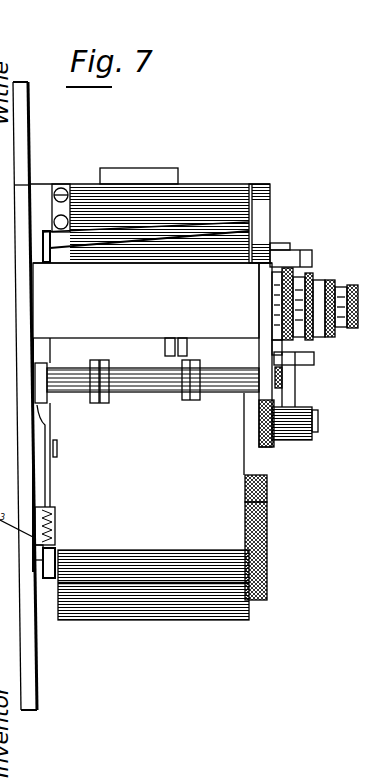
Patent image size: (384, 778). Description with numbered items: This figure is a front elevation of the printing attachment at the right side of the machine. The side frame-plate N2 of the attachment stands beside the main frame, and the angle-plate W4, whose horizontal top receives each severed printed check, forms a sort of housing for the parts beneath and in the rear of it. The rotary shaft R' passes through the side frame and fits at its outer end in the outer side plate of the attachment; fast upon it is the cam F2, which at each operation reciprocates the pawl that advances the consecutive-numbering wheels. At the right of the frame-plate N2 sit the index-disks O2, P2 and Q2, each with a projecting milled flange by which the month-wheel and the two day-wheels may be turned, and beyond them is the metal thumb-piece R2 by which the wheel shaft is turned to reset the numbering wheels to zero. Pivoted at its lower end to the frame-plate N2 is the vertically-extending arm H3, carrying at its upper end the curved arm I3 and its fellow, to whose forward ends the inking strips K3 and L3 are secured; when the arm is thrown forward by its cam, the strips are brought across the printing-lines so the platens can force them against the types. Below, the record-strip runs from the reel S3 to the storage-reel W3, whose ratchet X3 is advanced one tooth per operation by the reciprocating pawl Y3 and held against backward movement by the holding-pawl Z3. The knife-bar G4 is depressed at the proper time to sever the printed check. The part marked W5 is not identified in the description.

The side frame-plate N2 is at (262, 200).
The shaft W5 is at (383, 206).
The upper inking strip K3 is at (299, 258).
The curved arm I3 is at (316, 276).
The index-disk Q2 is at (328, 279).
The thumb-piece R2 is at (355, 286).
The index-disk O2 is at (274, 298).
The index-disk P2 is at (320, 335).
The lower inking strip L3 is at (303, 361).
The vertically-extending arm H3 is at (289, 388).
The shaft R' is at (147, 388).
The cam F2 is at (178, 392).
The reciprocating pawl Y3 is at (47, 470).
The ratchet X3 is at (54, 527).
The holding-pawl Z3 is at (57, 553).
The reel S3 is at (268, 487).
The storage-reel W3 is at (268, 523).
The knife-bar G4 is at (146, 224).
The angle-plate W4 is at (146, 300).